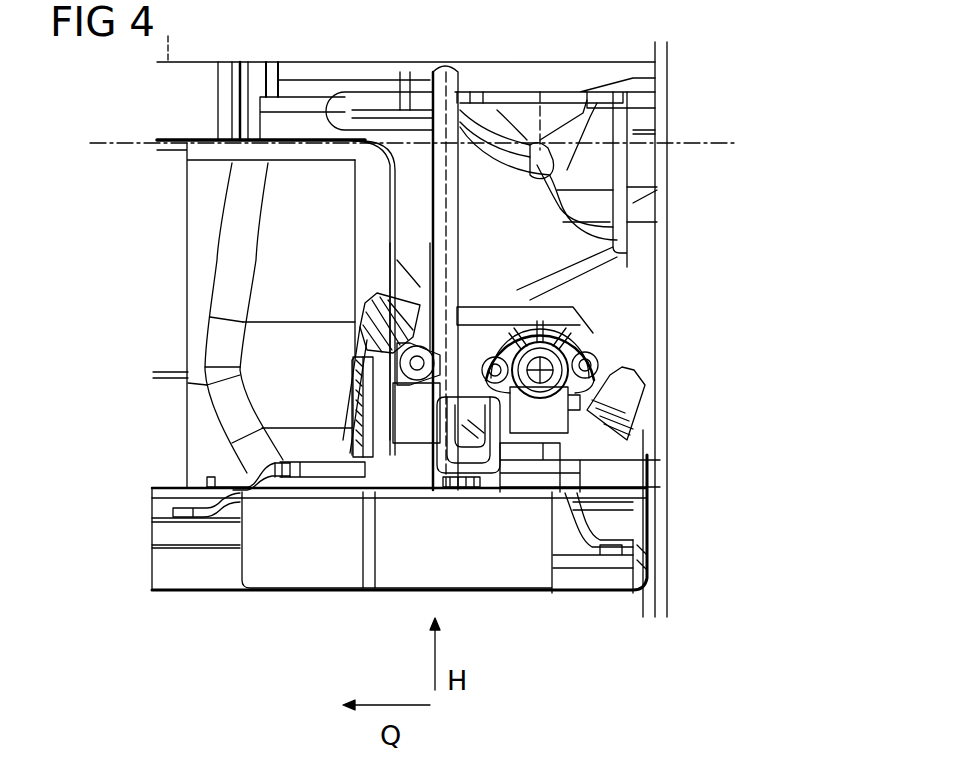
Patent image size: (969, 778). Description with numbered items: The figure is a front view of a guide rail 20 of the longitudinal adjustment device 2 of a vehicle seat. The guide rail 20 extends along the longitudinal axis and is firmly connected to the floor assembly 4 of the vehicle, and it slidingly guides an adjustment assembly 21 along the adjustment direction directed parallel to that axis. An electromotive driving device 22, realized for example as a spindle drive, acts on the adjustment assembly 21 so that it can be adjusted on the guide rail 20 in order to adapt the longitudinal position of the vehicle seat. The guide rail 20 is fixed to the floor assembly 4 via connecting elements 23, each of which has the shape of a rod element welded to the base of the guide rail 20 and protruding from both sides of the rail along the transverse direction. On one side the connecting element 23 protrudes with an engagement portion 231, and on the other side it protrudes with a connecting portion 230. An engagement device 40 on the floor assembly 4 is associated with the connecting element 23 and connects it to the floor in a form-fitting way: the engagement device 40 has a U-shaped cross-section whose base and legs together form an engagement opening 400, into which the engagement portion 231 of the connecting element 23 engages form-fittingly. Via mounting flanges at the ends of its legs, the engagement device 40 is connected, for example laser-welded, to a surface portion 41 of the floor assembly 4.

The longitudinal adjustment device 2 is at (322, 288).
The floor assembly 4 is at (178, 537).
The guide rail 20 is at (360, 445).
The adjustment assembly 21 is at (450, 270).
The electromotive driving device 22 is at (593, 346).
The connecting element 23 is at (518, 480).
The engagement device 40 is at (247, 472).
The surface portion 41 is at (152, 505).
The connecting portion 230 is at (565, 493).
The engagement portion 231 is at (375, 492).
The engagement opening 400 is at (270, 480).